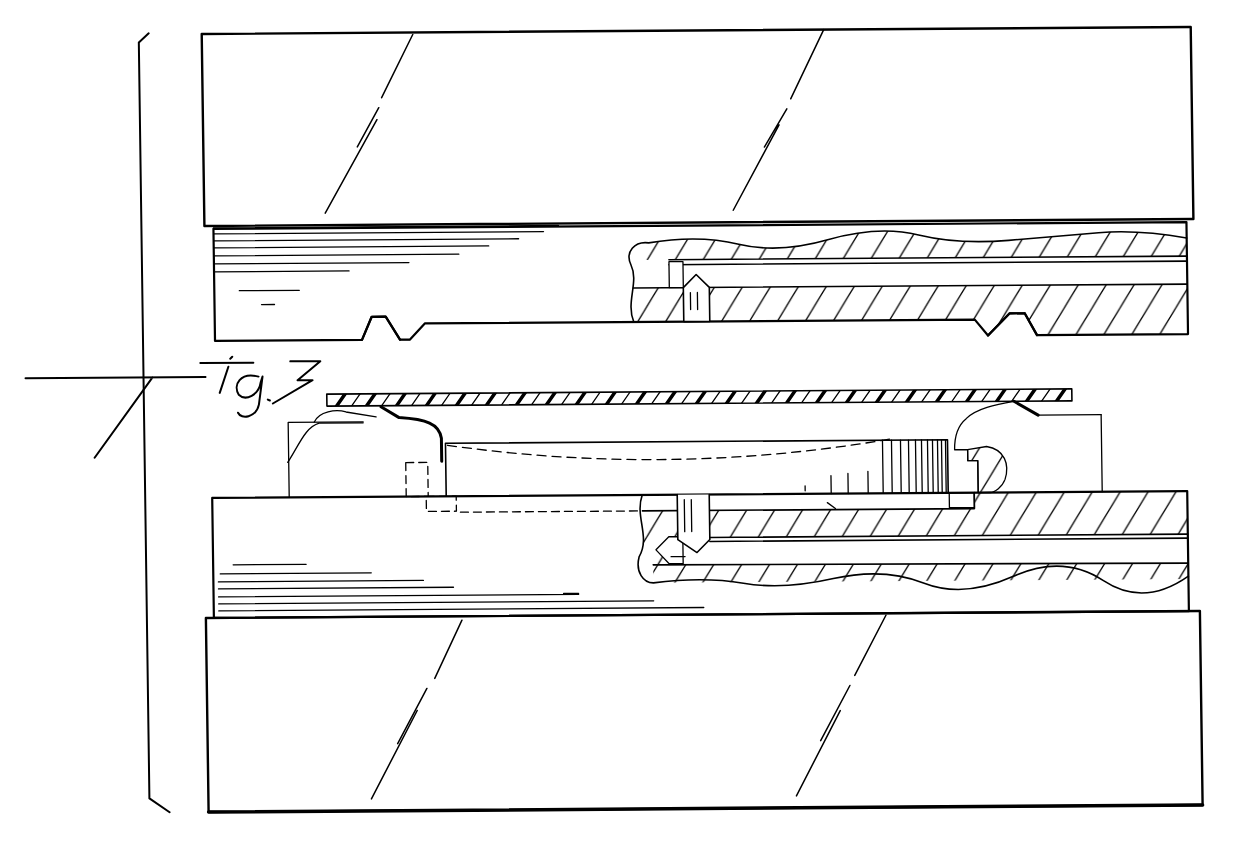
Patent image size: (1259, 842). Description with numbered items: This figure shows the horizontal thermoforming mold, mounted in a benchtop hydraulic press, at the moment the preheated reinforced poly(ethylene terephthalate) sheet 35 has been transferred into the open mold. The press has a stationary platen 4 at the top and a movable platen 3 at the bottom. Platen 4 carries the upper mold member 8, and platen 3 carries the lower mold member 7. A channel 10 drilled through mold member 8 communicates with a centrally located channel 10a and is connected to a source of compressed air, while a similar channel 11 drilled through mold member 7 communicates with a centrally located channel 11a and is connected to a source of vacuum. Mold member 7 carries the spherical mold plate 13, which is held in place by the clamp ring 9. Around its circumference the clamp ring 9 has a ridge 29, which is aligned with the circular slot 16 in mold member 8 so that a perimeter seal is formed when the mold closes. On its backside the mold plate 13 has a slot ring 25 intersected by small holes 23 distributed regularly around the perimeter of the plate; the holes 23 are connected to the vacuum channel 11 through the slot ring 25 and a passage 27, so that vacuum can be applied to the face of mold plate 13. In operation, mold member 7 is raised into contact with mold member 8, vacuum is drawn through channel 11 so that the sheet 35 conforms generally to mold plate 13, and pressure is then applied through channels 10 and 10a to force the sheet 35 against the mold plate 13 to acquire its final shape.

The movable platen 3 is at (1162, 732).
The stationary platen 4 is at (1173, 104).
The mold member 7 is at (1164, 592).
The mold member 8 is at (1167, 322).
The clamp ring 9 is at (367, 471).
The channel 10 is at (657, 283).
The channel 10a is at (724, 309).
The channel 11 is at (647, 558).
The channel 11a is at (679, 526).
The spherical mold plate 13 is at (823, 490).
The circular slot 16 is at (1030, 353).
The small holes 23 is at (949, 447).
The slot ring 25 is at (958, 503).
The passage 27 is at (829, 510).
The ridge 29 is at (1116, 409).
The reinforced poly(ethylene terephthalate) sheet 35 is at (1056, 398).